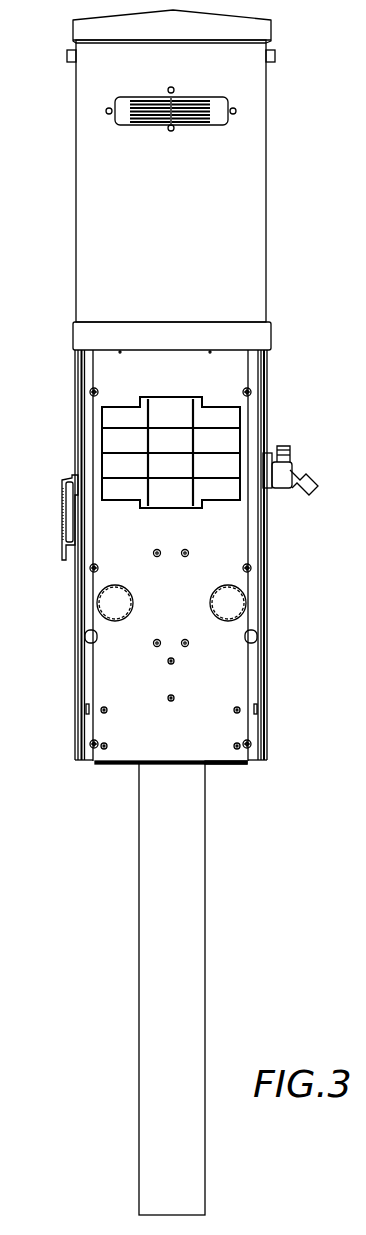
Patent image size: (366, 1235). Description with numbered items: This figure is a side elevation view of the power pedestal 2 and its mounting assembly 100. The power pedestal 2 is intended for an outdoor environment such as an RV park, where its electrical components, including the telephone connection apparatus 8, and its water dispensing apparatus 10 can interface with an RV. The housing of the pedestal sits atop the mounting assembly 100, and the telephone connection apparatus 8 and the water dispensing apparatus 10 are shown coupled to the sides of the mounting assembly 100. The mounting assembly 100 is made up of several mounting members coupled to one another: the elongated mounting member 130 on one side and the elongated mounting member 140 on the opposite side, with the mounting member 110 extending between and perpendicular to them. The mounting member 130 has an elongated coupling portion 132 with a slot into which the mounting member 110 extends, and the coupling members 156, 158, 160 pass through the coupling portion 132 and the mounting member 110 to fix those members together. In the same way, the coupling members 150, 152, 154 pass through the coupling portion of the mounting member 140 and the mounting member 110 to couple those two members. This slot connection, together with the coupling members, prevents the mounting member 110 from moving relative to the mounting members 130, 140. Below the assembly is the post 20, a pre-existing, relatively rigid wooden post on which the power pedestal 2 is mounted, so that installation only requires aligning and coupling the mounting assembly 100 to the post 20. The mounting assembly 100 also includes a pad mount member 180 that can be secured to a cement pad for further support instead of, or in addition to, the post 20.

The power pedestal 2 is at (55, 104).
The mounting assembly 100 is at (64, 191).
The telephone connection apparatus 8 is at (63, 498).
The water dispensing apparatus 10 is at (288, 470).
The post 20 is at (188, 872).
The mounting member 110 is at (135, 745).
The mounting member 130 is at (73, 607).
The coupling portion 132 is at (92, 666).
The mounting member 140 is at (268, 606).
The coupling member 150 is at (251, 743).
The coupling member 152 is at (251, 567).
The coupling member 154 is at (251, 391).
The coupling member 156 is at (90, 745).
The coupling member 158 is at (90, 569).
The coupling member 160 is at (90, 392).
The pad mount member 180 is at (226, 766).